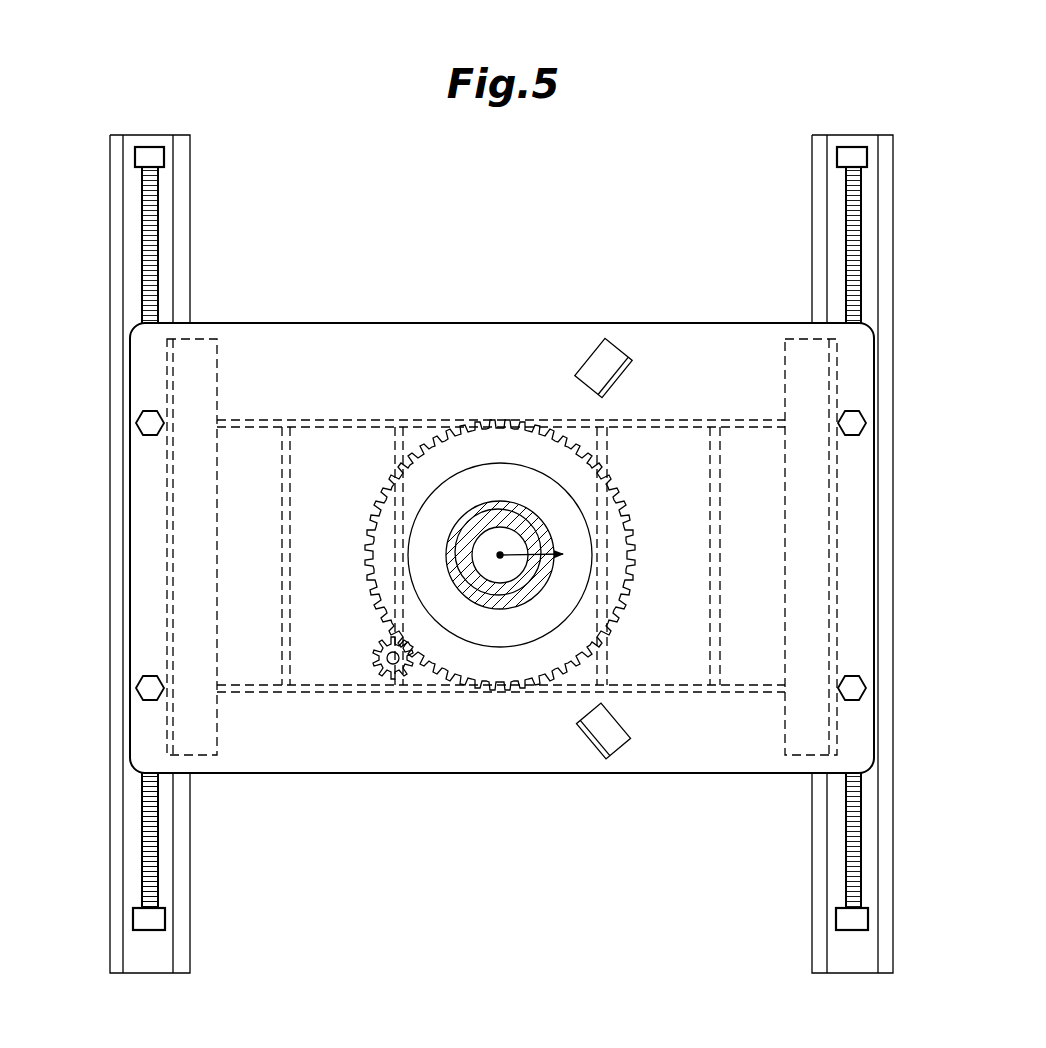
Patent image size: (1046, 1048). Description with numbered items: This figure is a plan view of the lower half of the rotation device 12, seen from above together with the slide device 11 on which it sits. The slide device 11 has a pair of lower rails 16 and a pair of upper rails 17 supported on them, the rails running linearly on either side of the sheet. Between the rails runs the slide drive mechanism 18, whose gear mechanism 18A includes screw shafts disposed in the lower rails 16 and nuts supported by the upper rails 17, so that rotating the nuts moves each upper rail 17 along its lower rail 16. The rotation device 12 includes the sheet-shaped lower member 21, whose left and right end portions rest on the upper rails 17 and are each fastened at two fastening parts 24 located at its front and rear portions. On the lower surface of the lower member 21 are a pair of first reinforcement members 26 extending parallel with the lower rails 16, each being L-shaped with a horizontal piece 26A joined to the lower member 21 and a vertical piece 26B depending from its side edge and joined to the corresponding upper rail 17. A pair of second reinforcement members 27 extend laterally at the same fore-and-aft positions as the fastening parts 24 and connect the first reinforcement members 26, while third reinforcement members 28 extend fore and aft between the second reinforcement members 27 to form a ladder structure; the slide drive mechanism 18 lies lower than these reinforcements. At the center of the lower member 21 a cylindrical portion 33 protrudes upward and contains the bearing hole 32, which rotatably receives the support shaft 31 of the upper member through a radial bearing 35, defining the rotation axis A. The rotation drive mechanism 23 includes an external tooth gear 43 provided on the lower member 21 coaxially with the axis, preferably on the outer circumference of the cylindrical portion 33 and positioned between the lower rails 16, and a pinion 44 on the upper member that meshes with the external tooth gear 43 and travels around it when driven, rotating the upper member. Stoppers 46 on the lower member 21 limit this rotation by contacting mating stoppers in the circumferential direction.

The slide device 11 is at (191, 976).
The rotation device 12 is at (465, 775).
The lower rail 16 is at (110, 958).
The upper rail 17 is at (124, 590).
The slide drive mechanism 18 is at (457, 538).
The gear mechanism 18A is at (142, 822).
The lower member 21 is at (528, 762).
The rotation drive mechanism 23 is at (630, 616).
The fastening part 24 is at (136, 423).
The first reinforcement member 26 is at (502, 523).
The horizontal piece 26A is at (217, 372).
The vertical piece 26B is at (173, 372).
The second reinforcement member 27 is at (325, 420).
The third reinforcement member 28 is at (708, 463).
The support shaft 31 is at (525, 525).
The bearing hole 32 is at (482, 612).
The cylindrical portion 33 is at (553, 612).
The radial bearing 35 is at (497, 505).
The external tooth gear 43 is at (522, 651).
The pinion 44 is at (382, 680).
The stopper 46 is at (615, 742).